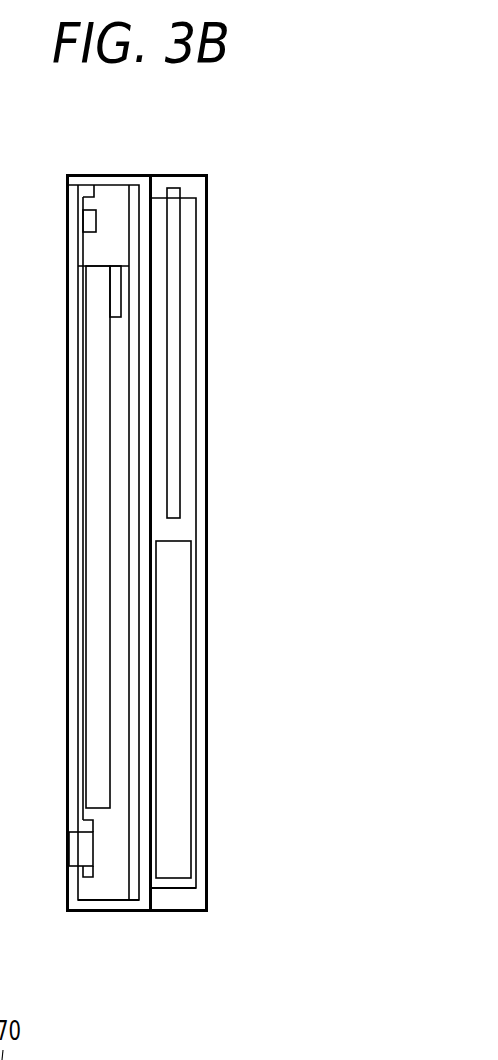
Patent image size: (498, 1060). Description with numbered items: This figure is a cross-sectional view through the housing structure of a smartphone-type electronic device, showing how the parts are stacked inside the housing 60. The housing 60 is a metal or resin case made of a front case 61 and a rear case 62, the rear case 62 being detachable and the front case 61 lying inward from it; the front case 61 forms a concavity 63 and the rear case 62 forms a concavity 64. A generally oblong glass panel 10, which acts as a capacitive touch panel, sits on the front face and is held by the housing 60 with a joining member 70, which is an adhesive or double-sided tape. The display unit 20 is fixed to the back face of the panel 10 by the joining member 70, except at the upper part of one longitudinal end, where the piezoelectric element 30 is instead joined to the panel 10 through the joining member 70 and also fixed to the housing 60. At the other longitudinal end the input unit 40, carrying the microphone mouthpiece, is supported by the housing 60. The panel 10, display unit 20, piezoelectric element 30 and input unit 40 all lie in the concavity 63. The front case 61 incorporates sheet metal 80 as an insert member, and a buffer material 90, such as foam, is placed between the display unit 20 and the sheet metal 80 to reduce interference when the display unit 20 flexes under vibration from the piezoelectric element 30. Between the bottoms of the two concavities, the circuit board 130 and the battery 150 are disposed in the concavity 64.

The panel 10 is at (67, 483).
The display unit 20 is at (92, 355).
The piezoelectric element 30 is at (83, 228).
The input unit 40 is at (80, 849).
The housing 60 is at (143, 156).
The front case 61 is at (106, 174).
The rear case 62 is at (178, 174).
The concavity 63 is at (120, 887).
The concavity 64 is at (188, 883).
The joining member 70 is at (80, 215).
The sheet metal 80 is at (131, 410).
The buffer material 90 is at (121, 295).
The circuit board 130 is at (176, 388).
The battery 150 is at (182, 673).